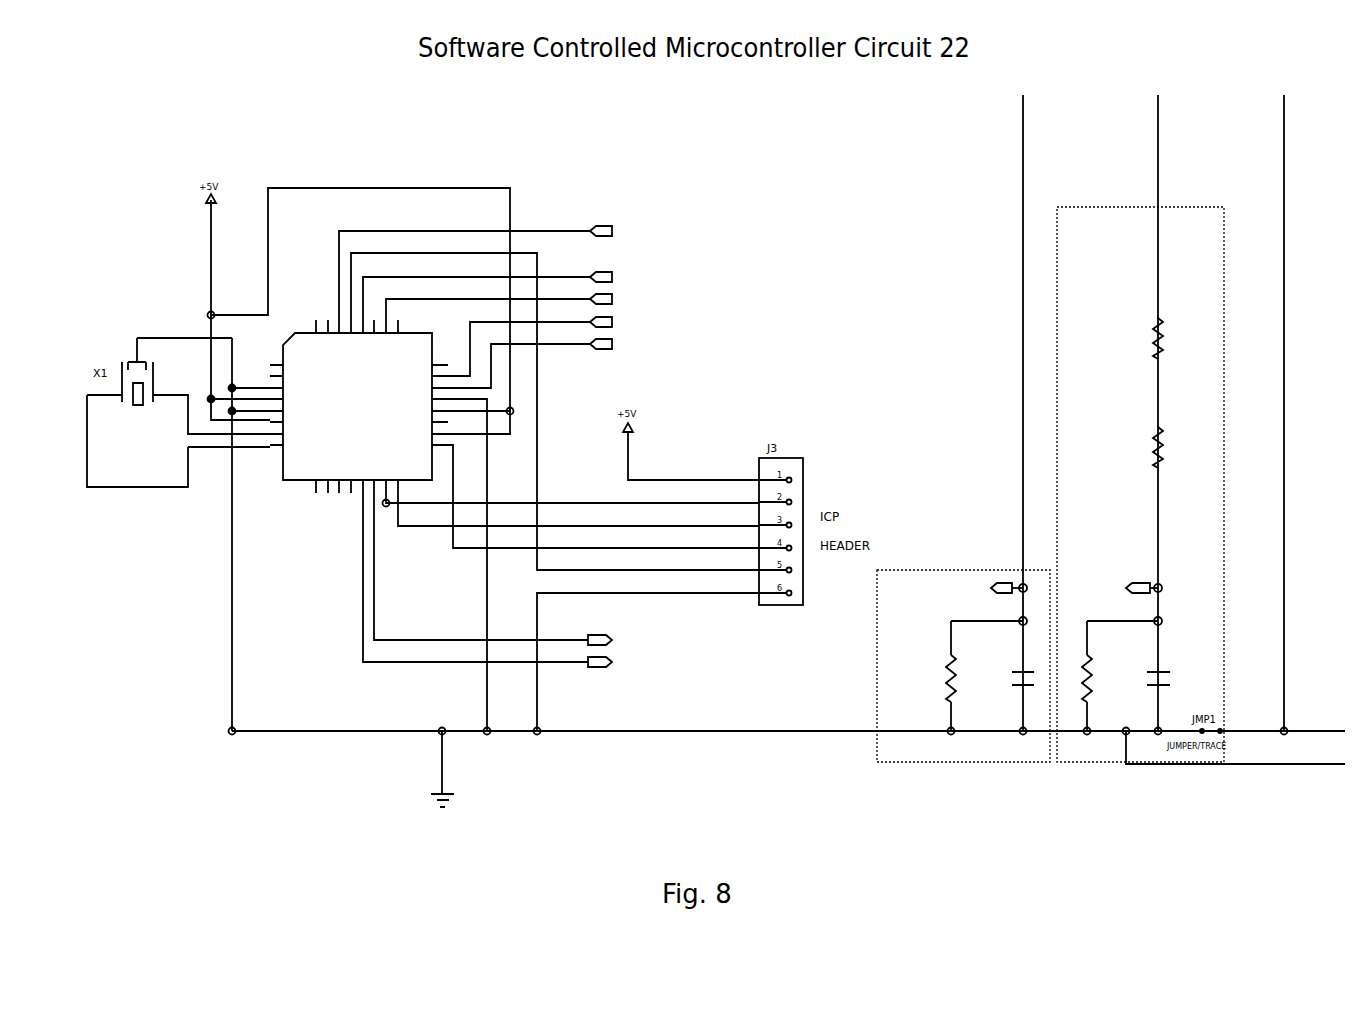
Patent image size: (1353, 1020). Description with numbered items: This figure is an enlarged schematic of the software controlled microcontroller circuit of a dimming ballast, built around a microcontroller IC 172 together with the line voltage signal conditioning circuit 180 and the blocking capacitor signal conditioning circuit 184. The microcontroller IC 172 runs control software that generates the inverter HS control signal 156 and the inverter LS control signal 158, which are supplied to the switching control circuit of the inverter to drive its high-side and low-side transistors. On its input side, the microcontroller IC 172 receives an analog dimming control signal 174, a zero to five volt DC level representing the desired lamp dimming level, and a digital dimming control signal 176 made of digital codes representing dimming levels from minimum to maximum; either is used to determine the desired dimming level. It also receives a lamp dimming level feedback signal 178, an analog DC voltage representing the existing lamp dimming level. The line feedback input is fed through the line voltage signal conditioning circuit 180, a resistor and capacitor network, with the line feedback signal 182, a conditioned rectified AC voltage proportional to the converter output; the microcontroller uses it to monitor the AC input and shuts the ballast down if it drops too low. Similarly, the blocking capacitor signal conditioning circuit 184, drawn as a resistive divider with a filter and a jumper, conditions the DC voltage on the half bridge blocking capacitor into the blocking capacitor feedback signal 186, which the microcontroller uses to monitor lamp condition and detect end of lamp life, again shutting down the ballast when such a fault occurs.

The inverter HS control signal 156 is at (702, 678).
The inverter LS control signal 158 is at (702, 641).
The microcontroller IC 172 is at (294, 522).
The analog dimming control signal 174 is at (699, 356).
The digital dimming control signal 176 is at (657, 220).
The lamp dimming level feedback signal 178 is at (734, 322).
The line voltage signal conditioning circuit 180 is at (921, 570).
The line feedback signal 182 is at (702, 296).
The blocking capacitor signal conditioning circuit 184 is at (1093, 207).
The blocking capacitor feedback signal 186 is at (701, 263).